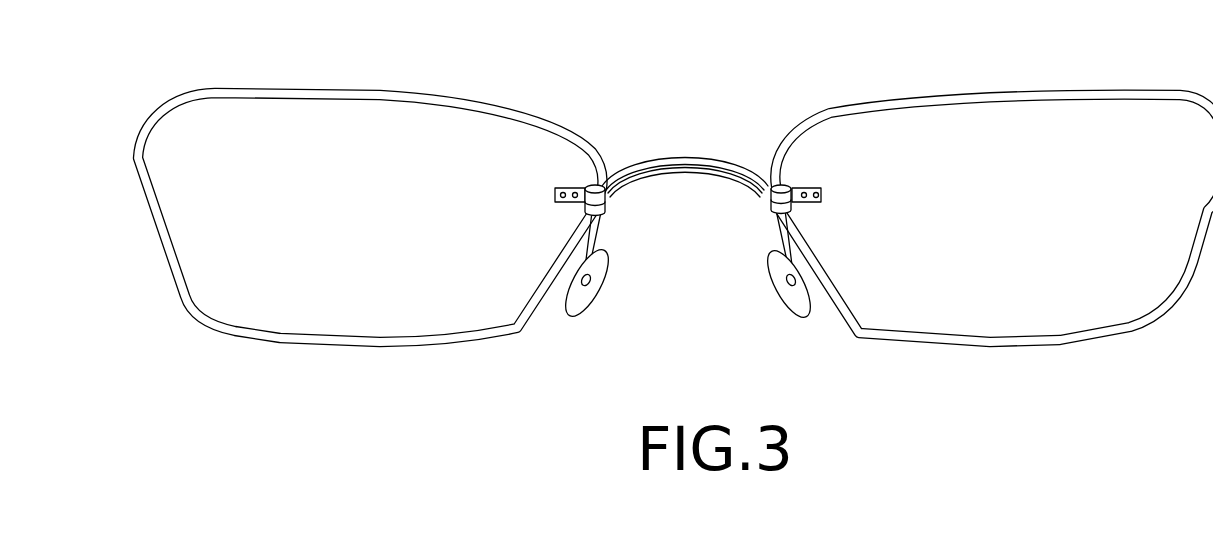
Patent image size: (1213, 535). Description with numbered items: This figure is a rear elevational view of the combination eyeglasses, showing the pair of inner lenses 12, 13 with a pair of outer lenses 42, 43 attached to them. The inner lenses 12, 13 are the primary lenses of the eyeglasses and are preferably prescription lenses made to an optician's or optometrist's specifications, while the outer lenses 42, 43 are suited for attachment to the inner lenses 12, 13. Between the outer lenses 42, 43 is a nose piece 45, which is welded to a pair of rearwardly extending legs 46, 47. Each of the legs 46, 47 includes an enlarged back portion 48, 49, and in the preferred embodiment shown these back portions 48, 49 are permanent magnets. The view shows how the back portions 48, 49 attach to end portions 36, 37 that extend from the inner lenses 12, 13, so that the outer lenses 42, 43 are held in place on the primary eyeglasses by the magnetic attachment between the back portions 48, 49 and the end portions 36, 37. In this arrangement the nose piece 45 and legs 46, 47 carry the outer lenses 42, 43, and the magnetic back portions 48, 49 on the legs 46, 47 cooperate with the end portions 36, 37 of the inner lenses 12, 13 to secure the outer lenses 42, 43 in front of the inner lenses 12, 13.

The inner lens 12 is at (433, 312).
The inner lens 13 is at (1028, 317).
The end portion 36 is at (541, 308).
The end portion 37 is at (779, 208).
The outer lens 42 is at (370, 213).
The outer lens 43 is at (994, 218).
The nose piece 45 is at (685, 188).
The leg 46 is at (617, 200).
The leg 47 is at (758, 197).
The back portion 48 is at (598, 186).
The back portion 49 is at (782, 187).